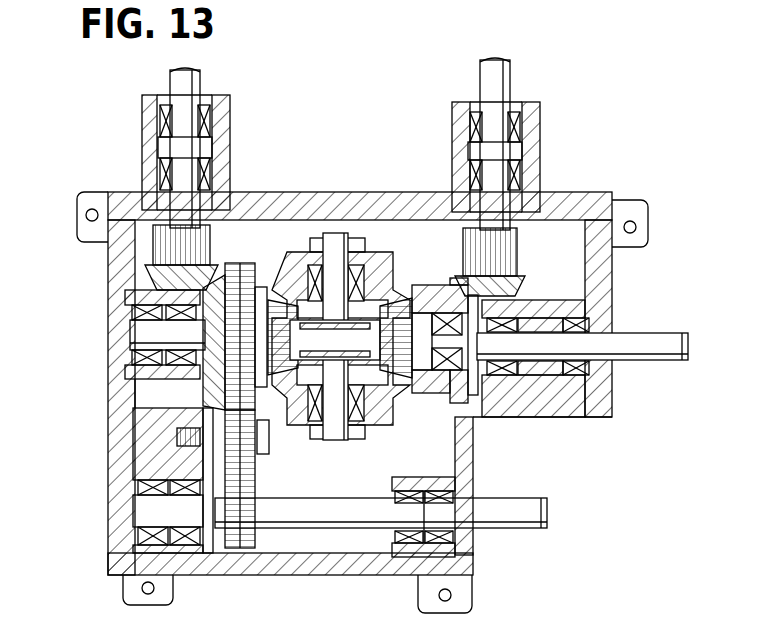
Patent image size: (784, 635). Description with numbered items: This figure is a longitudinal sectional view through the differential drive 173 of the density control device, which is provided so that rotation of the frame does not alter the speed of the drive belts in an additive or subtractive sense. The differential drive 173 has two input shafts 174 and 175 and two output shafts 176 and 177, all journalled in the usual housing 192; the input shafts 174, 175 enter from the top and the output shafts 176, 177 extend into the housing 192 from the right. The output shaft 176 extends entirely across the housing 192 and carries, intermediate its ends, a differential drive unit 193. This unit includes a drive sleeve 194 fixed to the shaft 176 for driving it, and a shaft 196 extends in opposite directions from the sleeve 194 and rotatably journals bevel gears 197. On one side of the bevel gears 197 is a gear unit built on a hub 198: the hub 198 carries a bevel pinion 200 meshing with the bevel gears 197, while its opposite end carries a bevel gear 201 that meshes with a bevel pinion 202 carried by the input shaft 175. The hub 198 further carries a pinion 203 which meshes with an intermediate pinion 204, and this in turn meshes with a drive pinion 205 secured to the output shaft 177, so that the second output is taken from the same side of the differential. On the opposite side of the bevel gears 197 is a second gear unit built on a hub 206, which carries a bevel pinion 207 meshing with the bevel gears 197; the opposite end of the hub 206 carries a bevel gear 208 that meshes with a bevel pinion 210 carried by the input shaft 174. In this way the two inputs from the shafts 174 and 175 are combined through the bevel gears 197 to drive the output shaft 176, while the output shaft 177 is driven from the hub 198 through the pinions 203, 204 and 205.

The differential drive 173 is at (567, 184).
The input shaft 174 is at (511, 80).
The input shaft 175 is at (202, 86).
The output shaft 176 is at (672, 362).
The output shaft 177 is at (515, 508).
The housing 192 is at (357, 203).
The differential drive unit 193 is at (405, 284).
The drive sleeve 194 is at (401, 382).
The shaft 196 is at (368, 268).
The bevel gears 197 is at (288, 300).
The hub 198 is at (272, 298).
The bevel pinion 200 is at (300, 334).
The bevel gear 201 is at (198, 389).
The bevel pinion 202 is at (152, 268).
The pinion 203 is at (227, 266).
The intermediate pinion 204 is at (260, 462).
The drive pinion 205 is at (250, 546).
The hub 206 is at (438, 392).
The bevel pinion 207 is at (395, 405).
The bevel gear 208 is at (495, 415).
The bevel pinion 210 is at (523, 282).